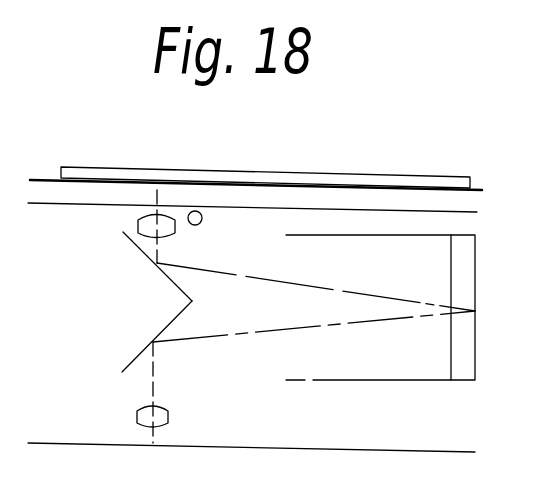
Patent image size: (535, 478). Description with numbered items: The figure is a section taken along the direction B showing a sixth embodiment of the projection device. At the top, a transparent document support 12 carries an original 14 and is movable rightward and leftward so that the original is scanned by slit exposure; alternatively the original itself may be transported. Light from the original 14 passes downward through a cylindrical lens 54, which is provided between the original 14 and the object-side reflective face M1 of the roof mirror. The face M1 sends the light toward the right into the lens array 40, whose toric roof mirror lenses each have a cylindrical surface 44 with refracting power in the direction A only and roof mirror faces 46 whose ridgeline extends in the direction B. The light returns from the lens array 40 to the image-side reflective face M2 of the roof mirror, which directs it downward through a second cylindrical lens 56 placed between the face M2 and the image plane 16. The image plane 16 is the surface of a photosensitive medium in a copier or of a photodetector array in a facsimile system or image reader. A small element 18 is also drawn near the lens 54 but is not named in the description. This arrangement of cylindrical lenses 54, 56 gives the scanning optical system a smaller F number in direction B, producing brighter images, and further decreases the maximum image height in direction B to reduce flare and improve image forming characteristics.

The transparent document support 12 is at (70, 203).
The original 14 is at (290, 177).
The image plane 16 is at (75, 445).
The light source 18 is at (202, 218).
The lens array 40 is at (386, 341).
The cylindrical surface 44 is at (287, 363).
The roof mirror faces 46 is at (475, 283).
The cylindrical lens 54 is at (175, 228).
The cylindrical lens 56 is at (168, 410).
The object-side reflective face M1 is at (135, 243).
The image-side reflective face M2 is at (138, 359).